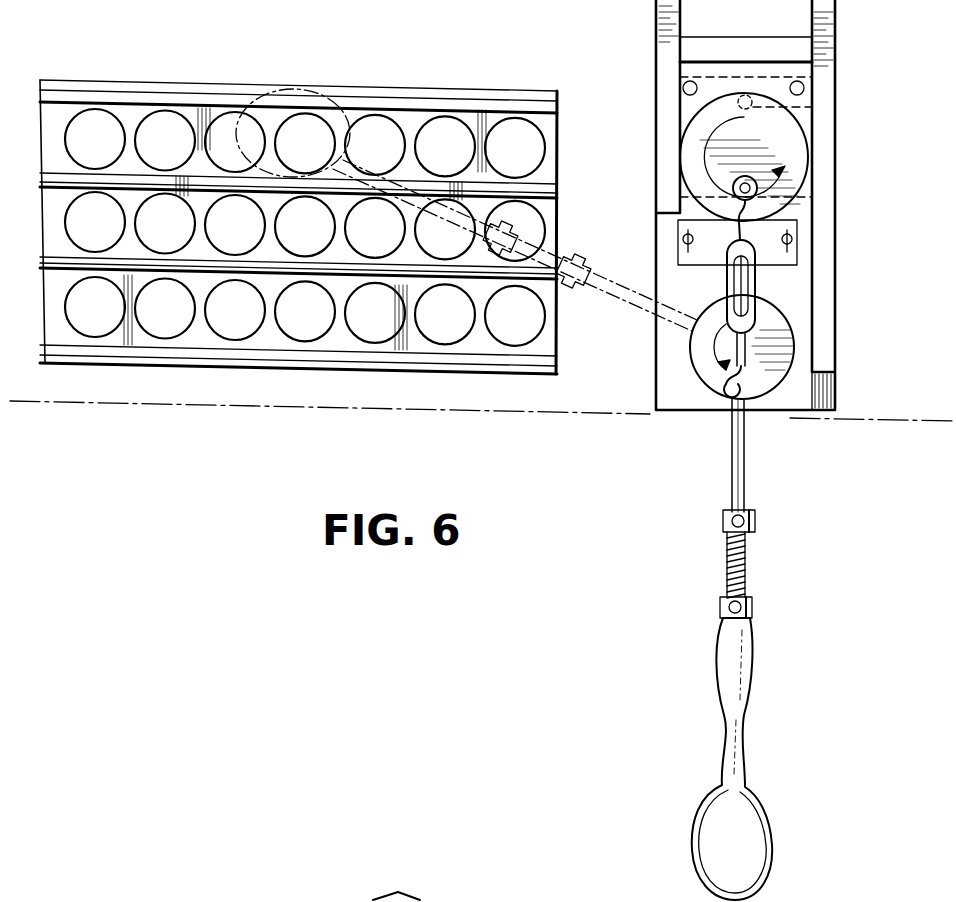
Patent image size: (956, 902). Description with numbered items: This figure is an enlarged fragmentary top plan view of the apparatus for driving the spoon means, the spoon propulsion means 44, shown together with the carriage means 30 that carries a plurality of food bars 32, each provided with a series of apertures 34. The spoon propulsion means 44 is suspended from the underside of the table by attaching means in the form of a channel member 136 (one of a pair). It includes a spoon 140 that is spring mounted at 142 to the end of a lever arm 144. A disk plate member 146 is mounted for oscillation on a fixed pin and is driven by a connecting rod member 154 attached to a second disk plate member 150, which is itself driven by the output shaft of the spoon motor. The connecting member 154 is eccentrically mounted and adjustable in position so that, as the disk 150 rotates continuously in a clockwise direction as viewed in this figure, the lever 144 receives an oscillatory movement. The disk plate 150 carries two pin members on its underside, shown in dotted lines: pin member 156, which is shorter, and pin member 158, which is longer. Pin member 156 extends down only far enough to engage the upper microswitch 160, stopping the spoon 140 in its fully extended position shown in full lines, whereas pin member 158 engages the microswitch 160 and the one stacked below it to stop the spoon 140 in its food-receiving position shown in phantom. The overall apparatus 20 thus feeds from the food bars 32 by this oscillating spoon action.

The feeding apparatus 20 is at (765, 759).
The carriage means 30 is at (115, 394).
The food bars 32 is at (548, 125).
The apertures 34 is at (165, 128).
The spoon propulsion means 44 is at (681, 431).
The channel member 136 is at (340, 900).
The spoon 140 is at (747, 820).
The spring mounting 142 is at (745, 563).
The lever arm 144 is at (637, 295).
The disk plate member 146 is at (783, 350).
The second disk plate member 150 is at (800, 155).
The connecting rod member 154 is at (757, 280).
The pin member 156 is at (820, 205).
The pin member 158 is at (813, 107).
The microswitch 160 is at (763, 237).